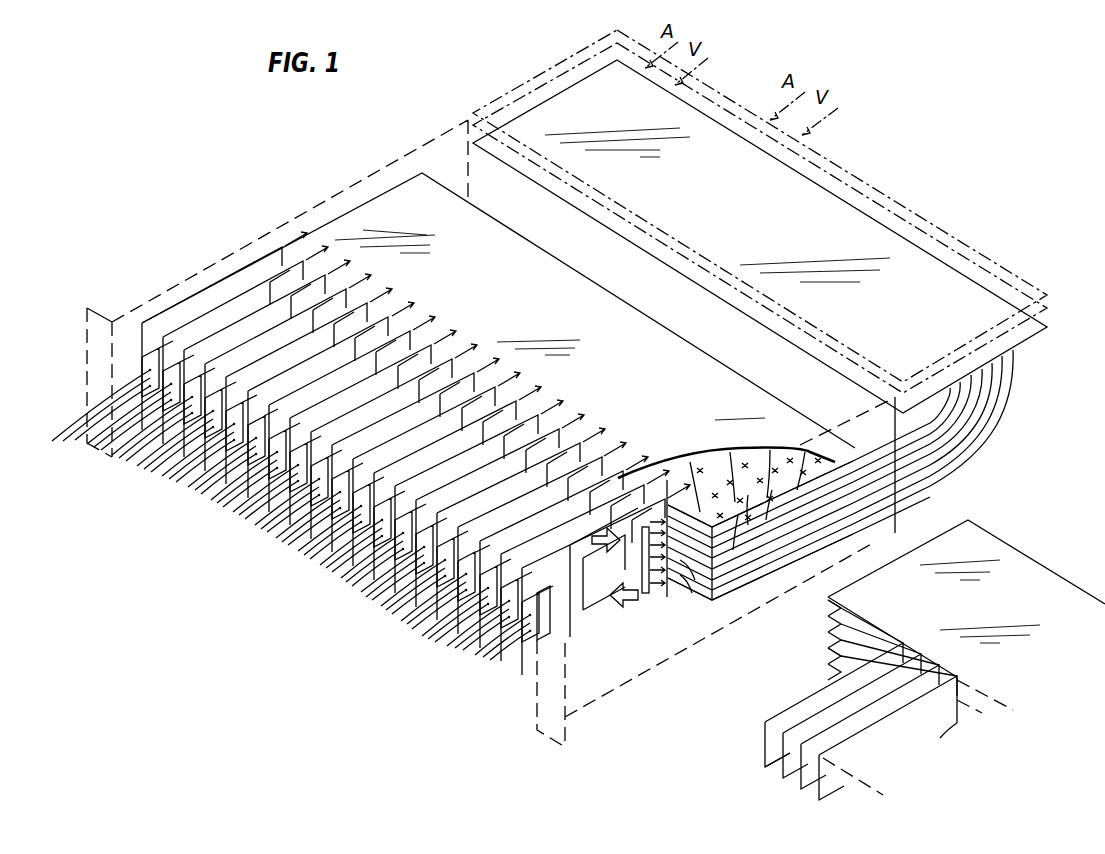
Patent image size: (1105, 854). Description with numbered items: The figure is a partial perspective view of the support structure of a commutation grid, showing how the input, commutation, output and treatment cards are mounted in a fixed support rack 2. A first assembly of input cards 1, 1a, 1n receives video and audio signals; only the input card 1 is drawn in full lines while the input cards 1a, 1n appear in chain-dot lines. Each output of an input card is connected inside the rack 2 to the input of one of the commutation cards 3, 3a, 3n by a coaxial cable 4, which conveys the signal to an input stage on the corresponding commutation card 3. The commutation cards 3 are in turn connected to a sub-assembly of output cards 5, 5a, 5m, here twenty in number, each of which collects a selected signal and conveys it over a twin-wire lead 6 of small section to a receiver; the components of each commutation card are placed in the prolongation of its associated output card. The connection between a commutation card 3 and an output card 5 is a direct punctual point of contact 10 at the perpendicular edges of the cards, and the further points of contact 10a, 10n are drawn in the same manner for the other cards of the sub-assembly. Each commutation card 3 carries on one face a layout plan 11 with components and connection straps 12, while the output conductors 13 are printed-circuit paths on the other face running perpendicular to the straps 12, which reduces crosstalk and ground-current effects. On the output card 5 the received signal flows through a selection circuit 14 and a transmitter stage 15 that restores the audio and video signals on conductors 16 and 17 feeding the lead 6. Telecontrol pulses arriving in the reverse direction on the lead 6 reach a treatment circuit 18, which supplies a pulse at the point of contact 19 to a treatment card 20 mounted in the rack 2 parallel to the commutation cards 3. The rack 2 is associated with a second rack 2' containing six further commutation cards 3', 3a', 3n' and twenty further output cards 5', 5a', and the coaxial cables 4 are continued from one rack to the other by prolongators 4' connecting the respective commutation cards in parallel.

The input card 1 is at (1050, 327).
The input card 1a is at (1046, 306).
The input card 1n is at (1012, 276).
The support rack 2 is at (491, 433).
The second rack 2' is at (964, 655).
The commutation card 3 is at (760, 552).
The commutation card 3' is at (876, 640).
The commutation card 3a is at (760, 580).
The commutation card 3a' is at (818, 640).
The commutation card 3n is at (760, 462).
The commutation card 3n' is at (823, 593).
The coaxial cable 4 is at (943, 437).
The prolongator 4' is at (913, 503).
The output card 5 is at (347, 528).
The output card 5' is at (861, 721).
The output card 5a is at (340, 532).
The output card 5a' is at (756, 755).
The output card 5m is at (153, 445).
The twin-wire lead 6 is at (486, 675).
The point of contact 10 is at (672, 604).
The fiber end 10a is at (688, 577).
The fiber ends 10n is at (672, 477).
The layout plan 11 is at (748, 492).
The connection straps 12 is at (770, 488).
The output conductors 13 is at (735, 547).
The selection circuit 14 is at (646, 596).
The transmitter stage 15 is at (618, 607).
The conductor 16 is at (576, 605).
The conductor 17 is at (552, 641).
The treatment circuit 18 is at (605, 536).
The point of contact 19 is at (650, 472).
The treatment card 20 is at (636, 330).